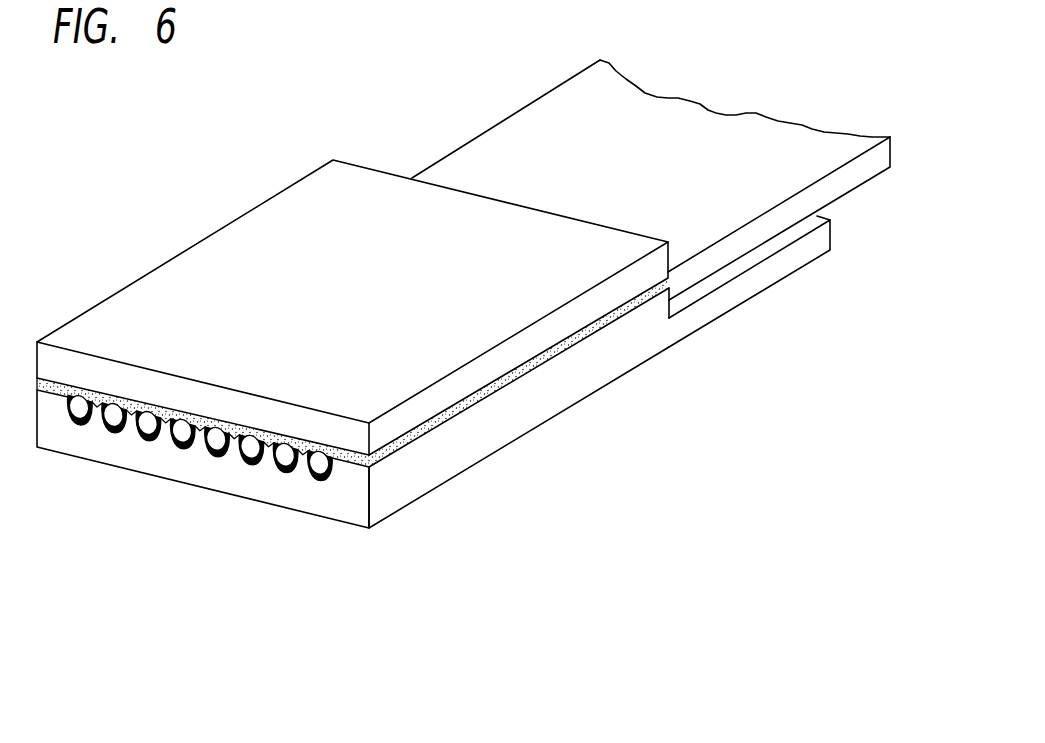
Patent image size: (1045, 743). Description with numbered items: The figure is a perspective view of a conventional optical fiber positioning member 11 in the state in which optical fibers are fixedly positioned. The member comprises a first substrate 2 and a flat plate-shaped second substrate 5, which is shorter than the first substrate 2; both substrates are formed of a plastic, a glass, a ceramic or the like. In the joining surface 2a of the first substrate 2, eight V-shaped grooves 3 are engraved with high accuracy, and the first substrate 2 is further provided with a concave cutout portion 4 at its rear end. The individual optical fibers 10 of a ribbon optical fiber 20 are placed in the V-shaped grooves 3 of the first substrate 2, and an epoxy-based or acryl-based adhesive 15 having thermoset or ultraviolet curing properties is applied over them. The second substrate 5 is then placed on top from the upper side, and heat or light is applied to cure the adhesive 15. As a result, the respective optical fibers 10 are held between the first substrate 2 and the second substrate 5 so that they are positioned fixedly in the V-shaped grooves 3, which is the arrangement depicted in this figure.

The first substrate 2 is at (592, 383).
The joining surface 2a is at (515, 378).
The V-shaped grooves 3 is at (277, 468).
The concave cutout portion 4 is at (747, 260).
The second substrate 5 is at (185, 255).
The optical fibers 10 is at (295, 465).
The optical fiber positioning member 11 is at (303, 156).
The adhesive 15 is at (455, 417).
The ribbon optical fiber 20 is at (728, 120).